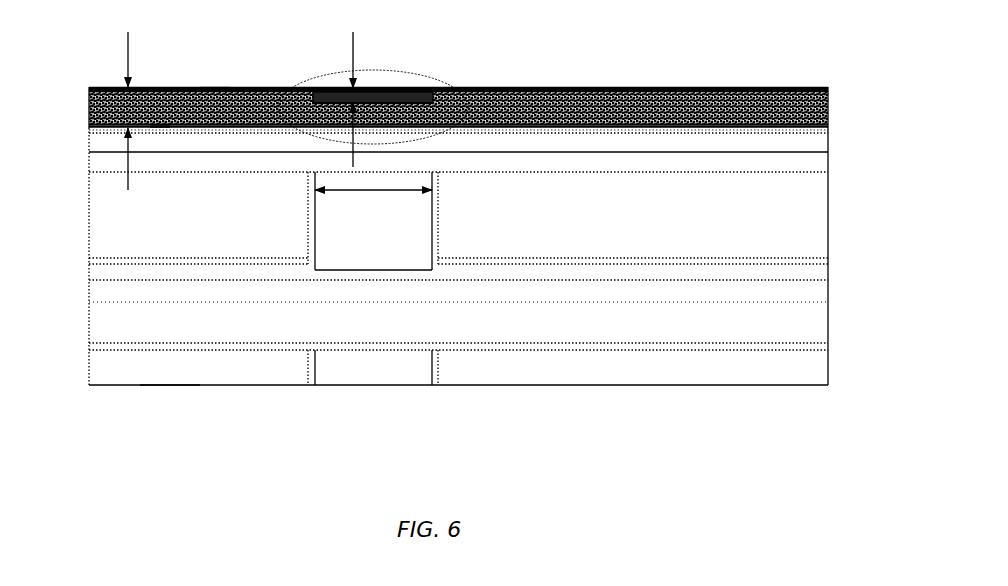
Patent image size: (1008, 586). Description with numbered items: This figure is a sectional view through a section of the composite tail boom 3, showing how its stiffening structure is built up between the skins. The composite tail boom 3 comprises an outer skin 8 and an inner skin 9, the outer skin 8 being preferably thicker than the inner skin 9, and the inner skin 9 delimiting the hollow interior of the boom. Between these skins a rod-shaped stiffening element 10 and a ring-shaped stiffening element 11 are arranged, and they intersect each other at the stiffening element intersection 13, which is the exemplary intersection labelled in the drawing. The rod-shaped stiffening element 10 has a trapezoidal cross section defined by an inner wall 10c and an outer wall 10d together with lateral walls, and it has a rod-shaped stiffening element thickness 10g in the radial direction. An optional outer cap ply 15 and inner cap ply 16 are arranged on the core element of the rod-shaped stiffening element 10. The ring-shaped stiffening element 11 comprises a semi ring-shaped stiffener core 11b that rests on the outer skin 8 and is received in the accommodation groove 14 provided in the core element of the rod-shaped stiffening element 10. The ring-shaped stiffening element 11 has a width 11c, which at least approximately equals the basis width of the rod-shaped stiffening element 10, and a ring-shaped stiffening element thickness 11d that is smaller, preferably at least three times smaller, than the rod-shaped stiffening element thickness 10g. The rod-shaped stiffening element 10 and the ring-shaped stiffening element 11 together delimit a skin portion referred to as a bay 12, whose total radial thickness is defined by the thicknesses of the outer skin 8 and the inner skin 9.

The composite tail boom 3 is at (166, 398).
The outer skin 8 is at (515, 87).
The inner skin 9 is at (753, 133).
The rod-shaped stiffening element 10 is at (770, 142).
The inner wall 10c is at (160, 130).
The outer wall 10d is at (215, 87).
The rod-shaped stiffening element thickness 10g is at (125, 48).
The ring-shaped stiffening element 11 is at (366, 90).
The ring-shaped stiffener core 11b is at (382, 97).
The width of ring-shaped stiffening element 11c is at (384, 192).
The ring-shaped stiffening element thickness 11d is at (352, 45).
The bay 12 is at (768, 220).
The stiffening element intersection 13 is at (321, 72).
The accommodation groove 14 is at (413, 94).
The outer cap ply 15 is at (566, 96).
The inner cap ply 16 is at (678, 125).